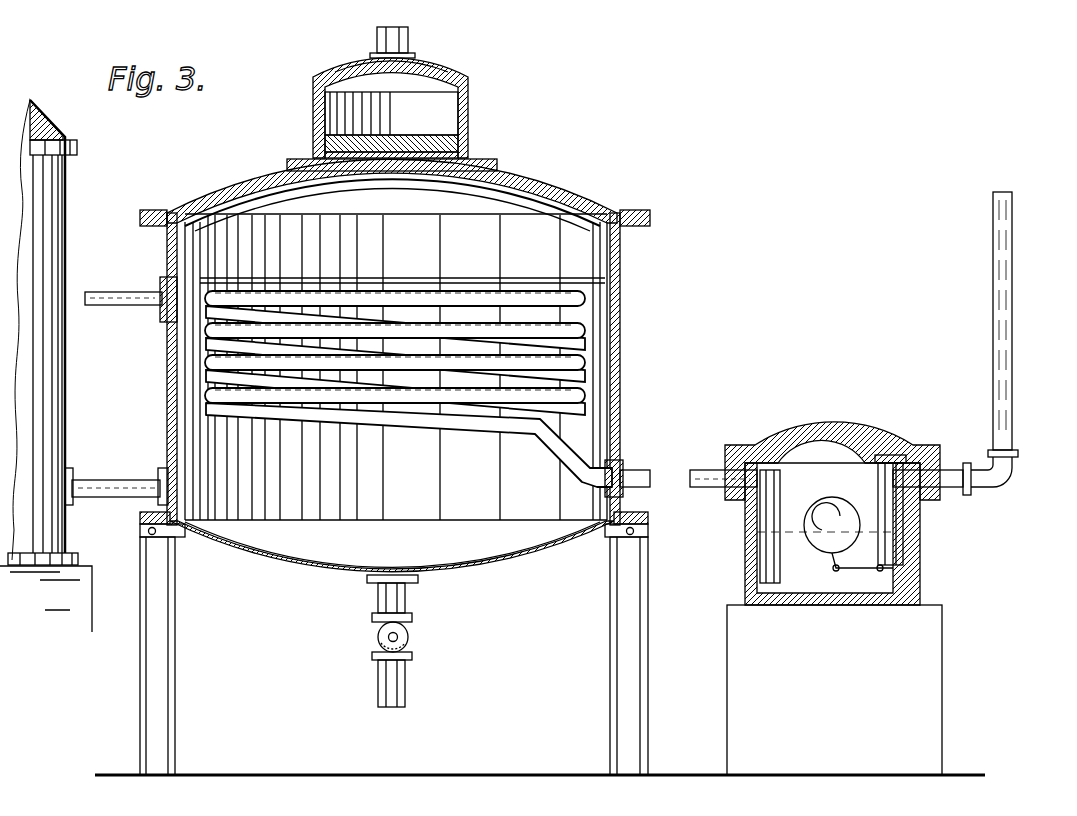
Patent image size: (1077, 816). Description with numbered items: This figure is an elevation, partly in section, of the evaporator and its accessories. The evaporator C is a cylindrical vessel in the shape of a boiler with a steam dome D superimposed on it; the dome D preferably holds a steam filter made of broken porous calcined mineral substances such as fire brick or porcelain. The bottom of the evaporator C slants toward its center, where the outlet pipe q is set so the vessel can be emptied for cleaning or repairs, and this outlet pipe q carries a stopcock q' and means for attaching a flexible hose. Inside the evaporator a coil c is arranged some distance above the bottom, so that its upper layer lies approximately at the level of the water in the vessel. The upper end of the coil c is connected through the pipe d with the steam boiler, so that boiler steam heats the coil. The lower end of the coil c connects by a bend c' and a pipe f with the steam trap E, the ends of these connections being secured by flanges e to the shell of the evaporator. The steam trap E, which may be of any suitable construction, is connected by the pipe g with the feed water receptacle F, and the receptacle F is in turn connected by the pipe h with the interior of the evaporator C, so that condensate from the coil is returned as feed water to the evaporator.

The evaporator C is at (395, 467).
The steam dome D is at (392, 99).
The coil c is at (395, 334).
The bend c' is at (409, 445).
The pipe d is at (113, 297).
The flanges e is at (622, 473).
The pipe h is at (95, 483).
The feed water receptacle F is at (54, 406).
The steam trap E is at (914, 562).
The pipe f is at (704, 470).
The pipe g is at (1004, 400).
The outlet pipe q is at (400, 641).
The stopcock q' is at (409, 637).